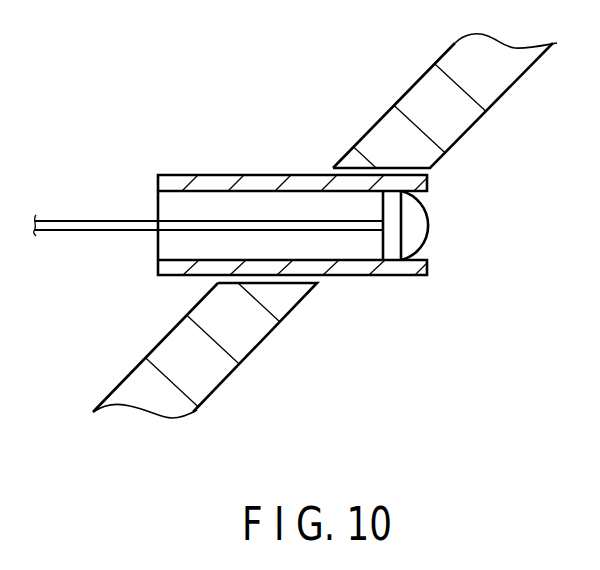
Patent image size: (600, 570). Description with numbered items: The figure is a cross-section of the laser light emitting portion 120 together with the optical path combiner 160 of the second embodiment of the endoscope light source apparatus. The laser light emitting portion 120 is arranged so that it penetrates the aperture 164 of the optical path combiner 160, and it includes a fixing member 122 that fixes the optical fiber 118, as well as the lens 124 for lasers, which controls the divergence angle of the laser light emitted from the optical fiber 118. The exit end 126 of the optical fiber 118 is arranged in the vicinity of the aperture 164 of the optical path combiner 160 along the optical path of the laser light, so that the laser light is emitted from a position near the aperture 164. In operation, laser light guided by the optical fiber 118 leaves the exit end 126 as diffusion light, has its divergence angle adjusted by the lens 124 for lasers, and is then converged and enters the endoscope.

The optical fiber 118 is at (101, 220).
The laser light emitting portion 120 is at (324, 198).
The fixing member 122 is at (212, 176).
The lens for lasers 124 is at (430, 227).
The exit end 126 is at (359, 226).
The optical path combiner 160 is at (497, 83).
The aperture 164 is at (224, 278).